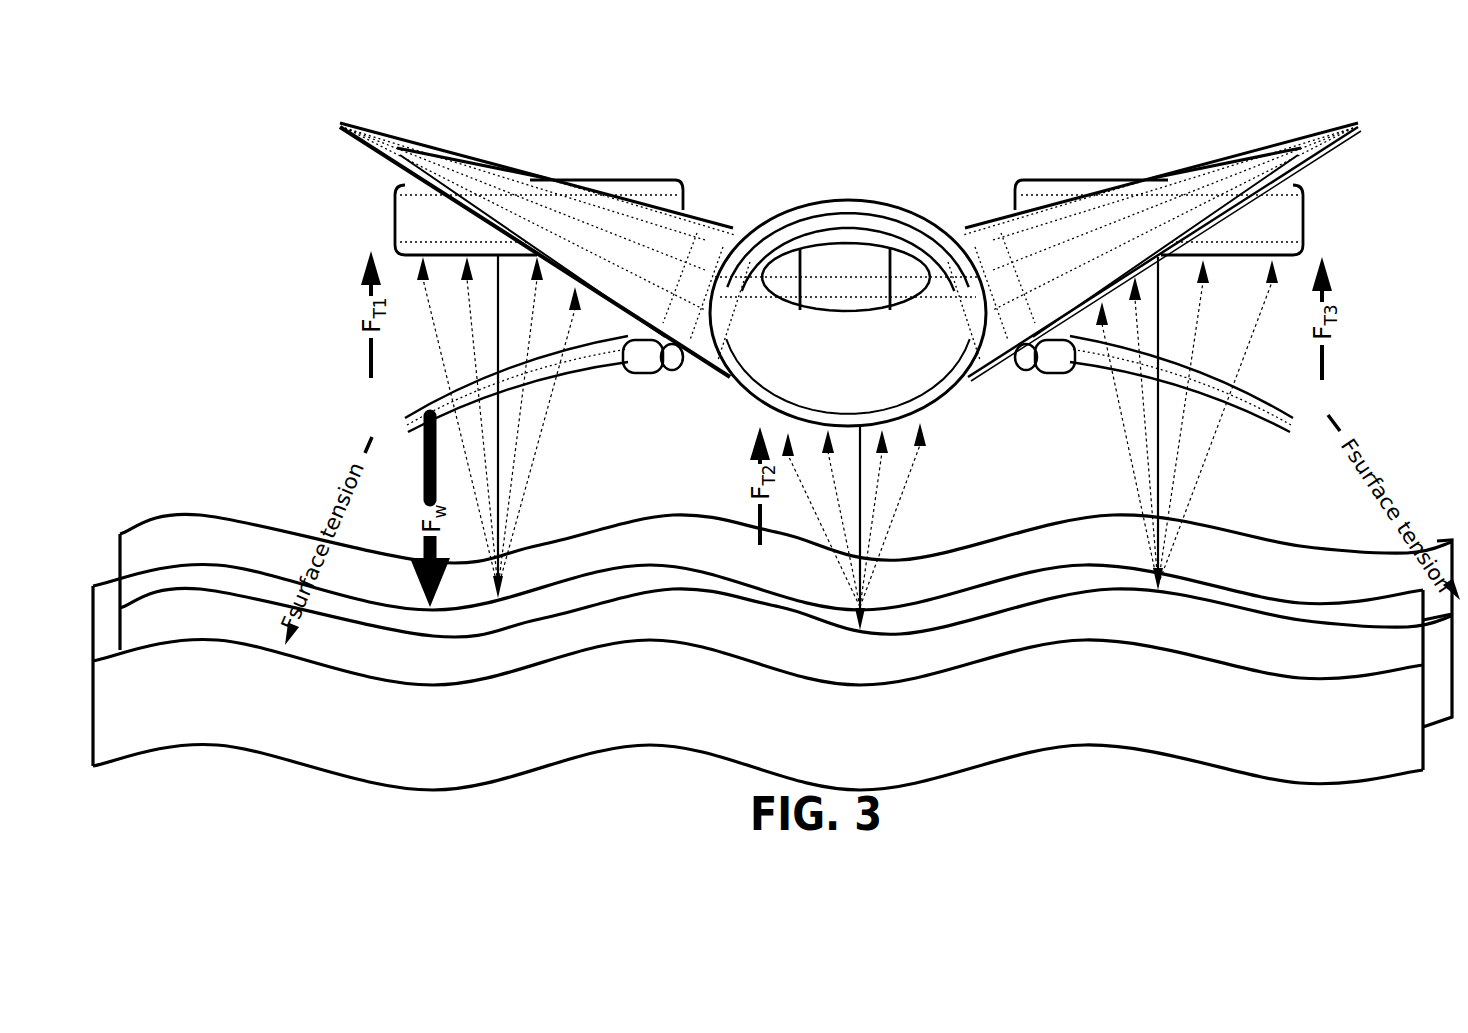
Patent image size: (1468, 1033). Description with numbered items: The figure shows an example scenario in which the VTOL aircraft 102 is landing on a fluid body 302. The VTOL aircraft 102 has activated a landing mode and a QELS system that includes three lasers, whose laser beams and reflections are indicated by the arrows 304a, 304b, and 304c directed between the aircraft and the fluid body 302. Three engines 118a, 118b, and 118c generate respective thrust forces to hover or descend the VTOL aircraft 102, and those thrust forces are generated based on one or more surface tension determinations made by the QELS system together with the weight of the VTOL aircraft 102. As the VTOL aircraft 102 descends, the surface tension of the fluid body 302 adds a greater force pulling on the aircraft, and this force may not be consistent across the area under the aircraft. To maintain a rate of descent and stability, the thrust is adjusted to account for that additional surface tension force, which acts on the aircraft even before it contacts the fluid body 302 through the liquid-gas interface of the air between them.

The VTOL aircraft 102 is at (408, 86).
The engine 118a is at (630, 182).
The engine 118b is at (845, 180).
The engine 118c is at (1050, 182).
The fluid body 302 is at (225, 517).
The arrows 304a is at (541, 486).
The arrows 304b is at (900, 521).
The arrows 304c is at (1205, 521).